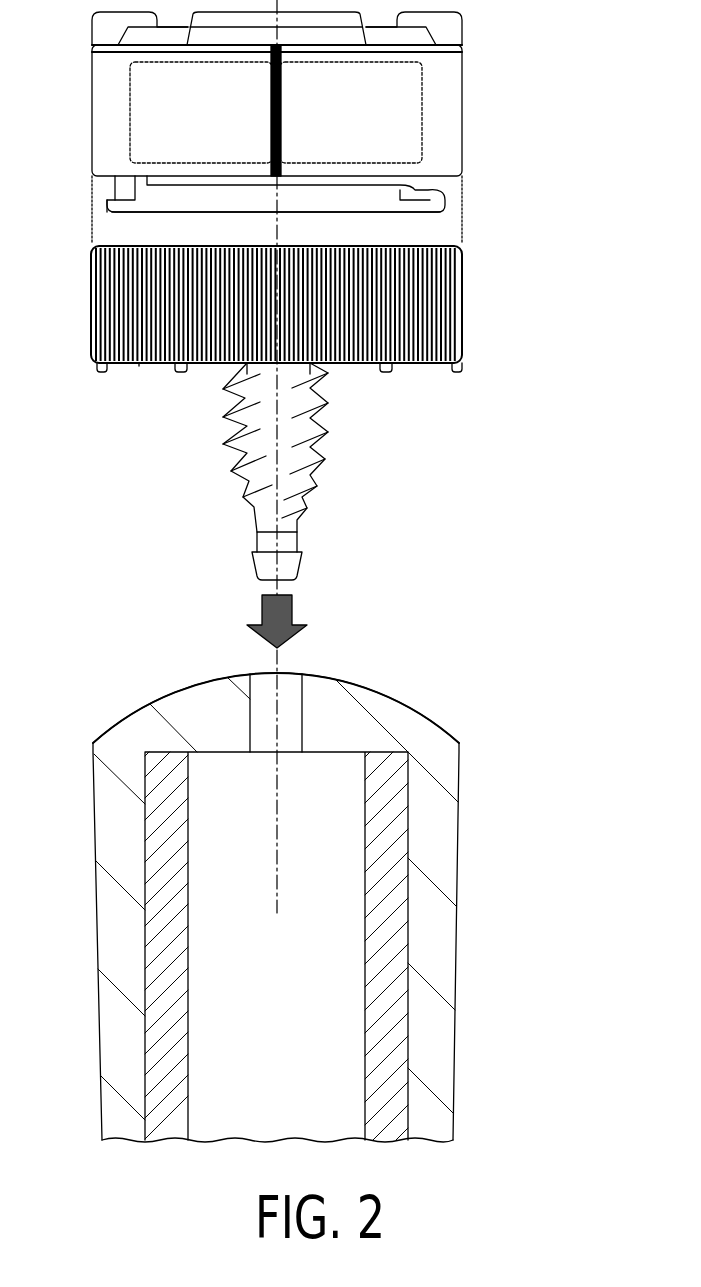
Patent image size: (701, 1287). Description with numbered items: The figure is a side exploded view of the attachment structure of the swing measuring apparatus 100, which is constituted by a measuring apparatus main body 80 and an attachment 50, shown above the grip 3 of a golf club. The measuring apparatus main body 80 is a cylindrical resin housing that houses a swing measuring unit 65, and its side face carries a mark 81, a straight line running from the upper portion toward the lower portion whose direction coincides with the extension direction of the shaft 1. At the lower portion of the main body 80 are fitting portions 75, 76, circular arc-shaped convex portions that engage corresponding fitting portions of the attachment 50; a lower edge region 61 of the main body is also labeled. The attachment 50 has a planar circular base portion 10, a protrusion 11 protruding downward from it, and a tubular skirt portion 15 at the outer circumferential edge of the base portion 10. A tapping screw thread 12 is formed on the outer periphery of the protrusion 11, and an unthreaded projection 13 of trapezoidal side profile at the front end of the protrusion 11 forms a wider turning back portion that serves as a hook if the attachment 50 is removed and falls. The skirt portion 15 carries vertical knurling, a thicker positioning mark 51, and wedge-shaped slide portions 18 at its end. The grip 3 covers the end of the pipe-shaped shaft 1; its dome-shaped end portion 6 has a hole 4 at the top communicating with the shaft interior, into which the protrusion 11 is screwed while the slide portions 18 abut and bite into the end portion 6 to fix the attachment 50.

The shaft 1 is at (398, 953).
The grip 3 is at (305, 883).
The hole 4 is at (298, 672).
The end portion 6 is at (382, 688).
The base portion 10 is at (221, 388).
The protrusion 11 is at (302, 473).
The screw thread 12 is at (328, 405).
The projection 13 is at (285, 562).
The skirt portion 15 is at (139, 367).
The slide portion 18 is at (102, 373).
The attachment 50 is at (314, 355).
The mark 51 is at (235, 393).
The lower edge 61 is at (355, 212).
The swing measuring unit 65 is at (423, 138).
The fitting portion 75 is at (453, 205).
The fitting portion 76 is at (106, 204).
The measuring apparatus main body 80 is at (286, 128).
The mark 81 is at (283, 117).
The swing measuring apparatus 100 is at (547, 85).